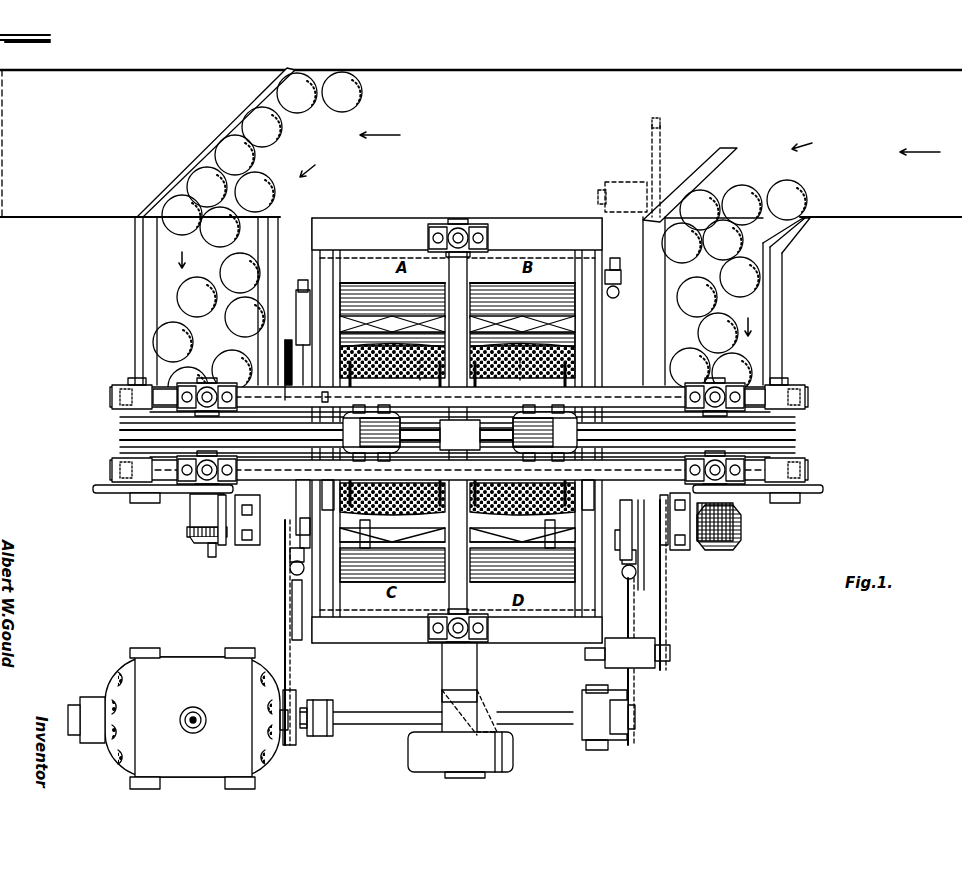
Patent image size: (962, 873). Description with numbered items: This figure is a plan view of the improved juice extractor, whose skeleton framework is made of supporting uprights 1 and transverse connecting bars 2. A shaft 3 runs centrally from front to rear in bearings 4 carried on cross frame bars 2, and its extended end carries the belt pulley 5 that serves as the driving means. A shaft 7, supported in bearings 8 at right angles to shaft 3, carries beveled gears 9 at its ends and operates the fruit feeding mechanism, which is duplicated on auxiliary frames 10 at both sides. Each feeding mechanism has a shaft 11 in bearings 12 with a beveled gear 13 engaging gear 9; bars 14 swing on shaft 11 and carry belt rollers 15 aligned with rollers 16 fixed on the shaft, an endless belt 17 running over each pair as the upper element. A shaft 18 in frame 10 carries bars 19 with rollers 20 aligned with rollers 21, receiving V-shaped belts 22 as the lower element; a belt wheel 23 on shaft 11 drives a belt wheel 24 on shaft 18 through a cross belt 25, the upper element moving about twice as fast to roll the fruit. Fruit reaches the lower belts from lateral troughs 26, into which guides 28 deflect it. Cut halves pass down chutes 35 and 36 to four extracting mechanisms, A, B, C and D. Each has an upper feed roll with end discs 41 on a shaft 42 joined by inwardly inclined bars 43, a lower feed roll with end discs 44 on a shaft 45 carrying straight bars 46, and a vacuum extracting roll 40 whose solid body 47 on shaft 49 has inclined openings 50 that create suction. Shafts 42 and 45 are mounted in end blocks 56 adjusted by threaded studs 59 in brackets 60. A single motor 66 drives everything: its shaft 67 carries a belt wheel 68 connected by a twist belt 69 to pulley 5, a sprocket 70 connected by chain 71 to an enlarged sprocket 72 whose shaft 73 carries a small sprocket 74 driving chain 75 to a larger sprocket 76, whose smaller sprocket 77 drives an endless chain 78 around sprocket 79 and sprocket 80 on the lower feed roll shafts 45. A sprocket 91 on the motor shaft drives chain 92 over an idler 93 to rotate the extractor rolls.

The supporting uprights 1 is at (312, 620).
The transverse connecting bars 2 is at (540, 240).
The shaft 3 is at (466, 285).
The bearings 4 is at (468, 228).
The belt pulley 5 is at (513, 740).
The shaft 7 is at (708, 518).
The bearings 8 is at (248, 495).
The beveled gears 9 is at (222, 545).
The auxiliary frames 10 is at (112, 405).
The shaft 11 is at (207, 383).
The bearings 12 is at (180, 395).
The beveled gear 13 is at (195, 543).
The bars 14 is at (112, 470).
The belt roller 15 is at (378, 416).
The belt rollers 16 is at (700, 410).
The endless belt 17 is at (258, 430).
The shaft 18 is at (130, 380).
The bars 19 is at (797, 450).
The belt rollers 20 is at (355, 420).
The belt rollers 21 is at (797, 417).
The endless V-shaped belts 22 is at (120, 436).
The belt wheel 23 is at (198, 500).
The belt wheel 24 is at (110, 495).
The cross belt 25 is at (148, 504).
The troughs 26 is at (143, 332).
The guides 28 is at (218, 131).
The chute 35 is at (412, 448).
The chute 36 is at (405, 378).
The vacuum extracting roll 40 is at (372, 495).
The end discs 41 is at (345, 300).
The shaft 42 is at (432, 322).
The bars 43 is at (395, 322).
The end discs 44 is at (345, 560).
The shaft 45 is at (302, 288).
The bars 46 is at (560, 300).
The solid cylindrical body 47 is at (330, 490).
The shaft 49 is at (302, 482).
The openings 50 is at (400, 495).
The end frames or blocks 56 is at (340, 378).
The threaded studs 59 is at (288, 560).
The brackets 60 is at (290, 590).
The motor 66 is at (172, 672).
The motor shaft 67 is at (373, 722).
The belt wheel 68 is at (442, 705).
The twist belt 69 is at (490, 725).
The sprocket 70 is at (634, 740).
The chain 71 is at (630, 700).
The enlarged sprocket 72 is at (636, 612).
The shaft 73 is at (670, 650).
The small sprocket 74 is at (668, 660).
The chain 75 is at (646, 573).
The larger sprocket 76 is at (663, 134).
The smaller sprocket 77 is at (650, 180).
The endless chain 78 is at (650, 560).
The sprocket 79 is at (668, 590).
The sprocket 80 is at (700, 297).
The sprocket 91 is at (288, 700).
The chain 92 is at (284, 600).
The idler 93 is at (283, 350).